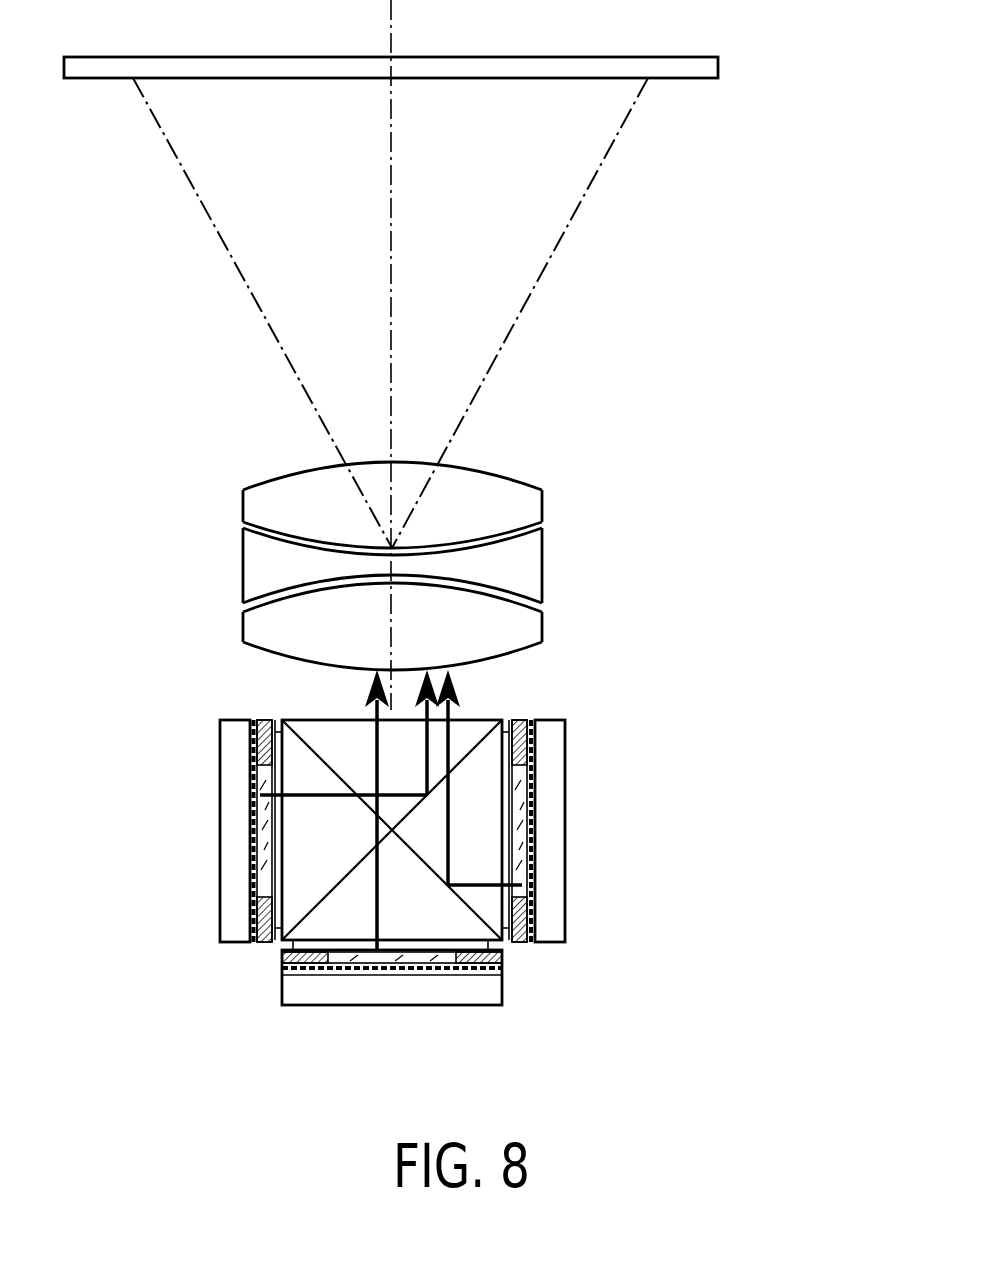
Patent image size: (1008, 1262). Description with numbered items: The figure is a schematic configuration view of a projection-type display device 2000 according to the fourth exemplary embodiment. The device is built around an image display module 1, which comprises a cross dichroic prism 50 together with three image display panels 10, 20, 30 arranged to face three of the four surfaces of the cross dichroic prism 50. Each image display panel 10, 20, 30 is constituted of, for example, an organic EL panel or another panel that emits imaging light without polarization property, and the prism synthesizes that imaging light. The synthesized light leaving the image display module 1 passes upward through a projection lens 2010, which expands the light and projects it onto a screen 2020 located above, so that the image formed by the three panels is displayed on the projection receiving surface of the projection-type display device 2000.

The projection-type display device 2000 is at (790, 108).
The screen 2020 is at (680, 79).
The projection lens 2010 is at (566, 470).
The cross dichroic prism 50 is at (332, 719).
The image display panel 20 is at (220, 843).
The image display panel 10 is at (556, 795).
The image display panel 30 is at (400, 1006).
The image display module 1 is at (553, 988).